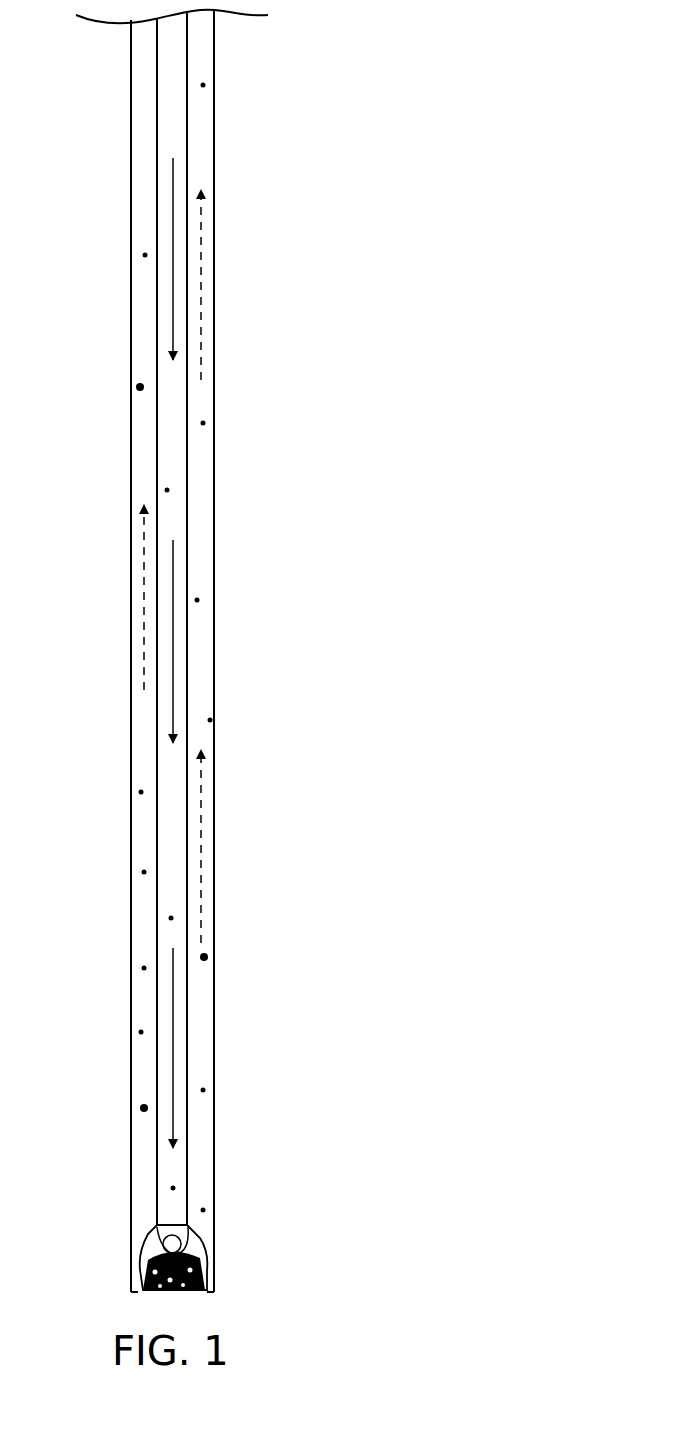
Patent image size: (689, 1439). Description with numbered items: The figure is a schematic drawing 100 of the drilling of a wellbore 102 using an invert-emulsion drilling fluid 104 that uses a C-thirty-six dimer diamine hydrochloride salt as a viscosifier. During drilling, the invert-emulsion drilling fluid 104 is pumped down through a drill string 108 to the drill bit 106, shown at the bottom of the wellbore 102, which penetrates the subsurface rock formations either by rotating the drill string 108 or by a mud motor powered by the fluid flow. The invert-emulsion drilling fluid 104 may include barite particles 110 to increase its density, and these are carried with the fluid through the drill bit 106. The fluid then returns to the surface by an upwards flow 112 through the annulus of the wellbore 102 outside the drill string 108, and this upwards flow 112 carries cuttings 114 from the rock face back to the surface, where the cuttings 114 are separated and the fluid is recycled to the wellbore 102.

The schematic drawing 100 is at (460, 80).
The wellbore 102 is at (214, 520).
The invert-emulsion drilling fluid 104 is at (173, 682).
The drill bit 106 is at (200, 1250).
The drill string 108 is at (157, 832).
The barite particles 110 is at (145, 255).
The upwards flow 112 is at (202, 260).
The cuttings 114 is at (140, 387).